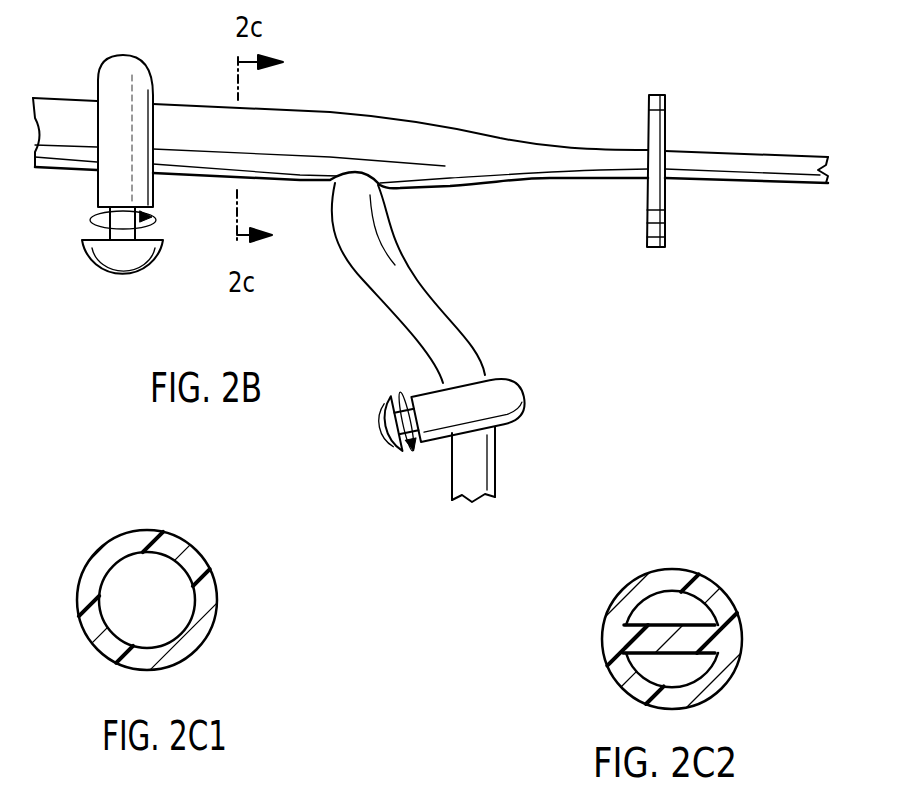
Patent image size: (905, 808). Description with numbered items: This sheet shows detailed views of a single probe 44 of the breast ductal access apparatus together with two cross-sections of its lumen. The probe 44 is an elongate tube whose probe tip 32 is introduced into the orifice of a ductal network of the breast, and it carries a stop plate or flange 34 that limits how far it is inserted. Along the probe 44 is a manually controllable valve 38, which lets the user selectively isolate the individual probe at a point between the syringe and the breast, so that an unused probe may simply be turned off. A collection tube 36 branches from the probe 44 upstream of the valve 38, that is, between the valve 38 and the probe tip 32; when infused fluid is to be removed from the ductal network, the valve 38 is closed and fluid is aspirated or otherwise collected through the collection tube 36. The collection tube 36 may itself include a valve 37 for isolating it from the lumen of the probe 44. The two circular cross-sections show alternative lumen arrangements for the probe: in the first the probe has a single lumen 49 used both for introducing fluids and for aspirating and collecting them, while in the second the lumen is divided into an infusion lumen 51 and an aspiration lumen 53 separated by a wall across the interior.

In FIG. 2B, the probe tip 32 is at (782, 184).
In FIG. 2B, the probe 44 is at (400, 123).
In FIG. 2B, the stop plate or flange 34 is at (667, 97).
In FIG. 2B, the valve 38 is at (130, 67).
In FIG. 2B, the collection tube 36 is at (430, 283).
In FIG. 2B, the valve 37 is at (525, 395).
In FIG. 2C1, the single lumen 49 is at (170, 585).
In FIG. 2C2, the infusion lumen 51 is at (695, 616).
In FIG. 2C2, the aspiration lumen 53 is at (690, 668).